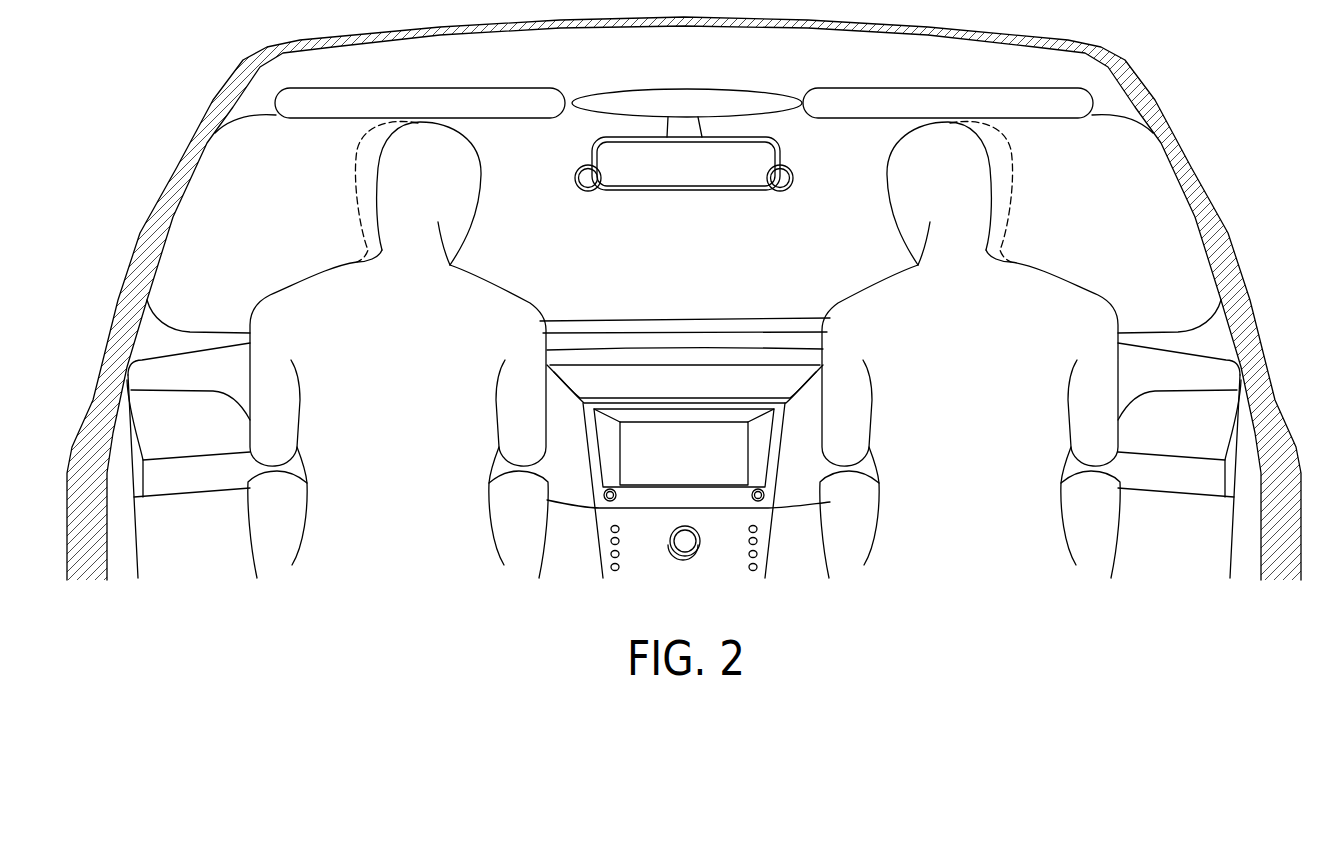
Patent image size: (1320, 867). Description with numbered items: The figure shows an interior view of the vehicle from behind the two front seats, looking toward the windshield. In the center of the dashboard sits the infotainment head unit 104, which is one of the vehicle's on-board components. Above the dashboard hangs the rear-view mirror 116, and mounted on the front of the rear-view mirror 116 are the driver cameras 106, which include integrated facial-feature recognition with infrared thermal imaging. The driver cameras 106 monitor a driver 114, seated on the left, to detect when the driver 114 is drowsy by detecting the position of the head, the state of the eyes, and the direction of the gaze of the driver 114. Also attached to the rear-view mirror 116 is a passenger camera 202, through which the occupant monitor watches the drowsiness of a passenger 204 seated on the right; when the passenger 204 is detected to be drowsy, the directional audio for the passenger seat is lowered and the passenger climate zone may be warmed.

The infotainment head unit 104 is at (611, 448).
The driver cameras 106 is at (588, 191).
The driver 114 is at (481, 181).
The rear-view mirror 116 is at (683, 190).
The passenger camera 202 is at (780, 191).
The passenger 204 is at (889, 181).